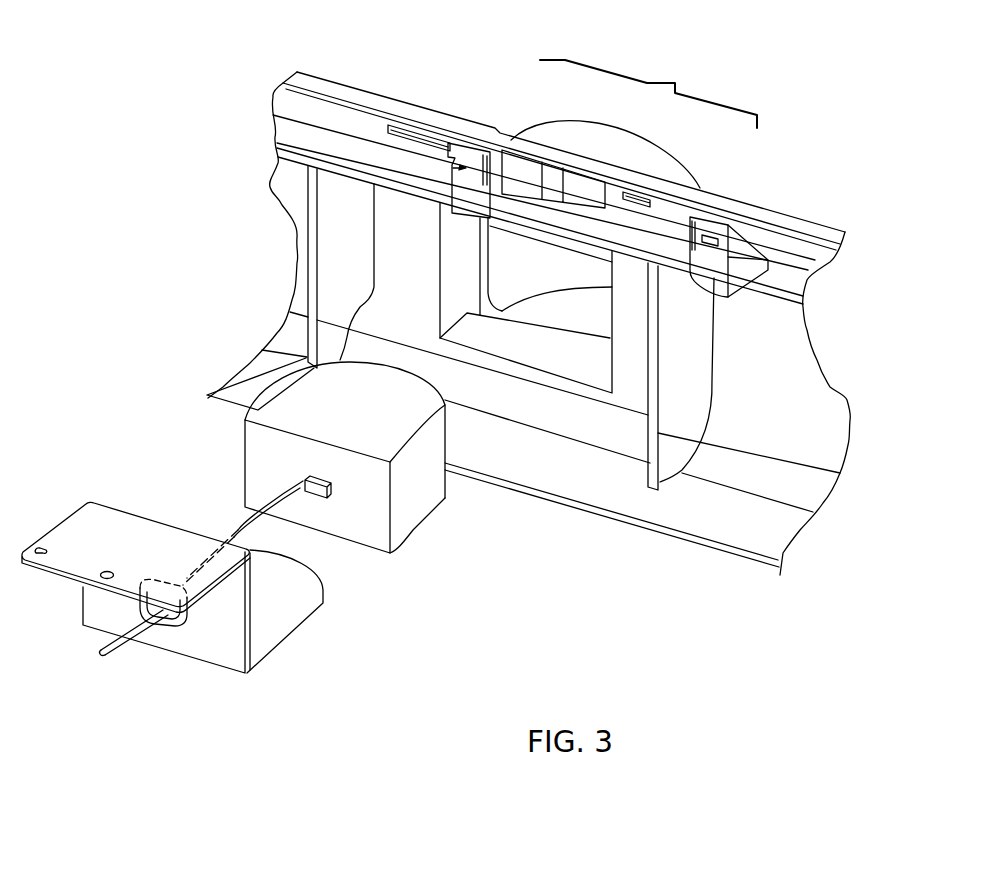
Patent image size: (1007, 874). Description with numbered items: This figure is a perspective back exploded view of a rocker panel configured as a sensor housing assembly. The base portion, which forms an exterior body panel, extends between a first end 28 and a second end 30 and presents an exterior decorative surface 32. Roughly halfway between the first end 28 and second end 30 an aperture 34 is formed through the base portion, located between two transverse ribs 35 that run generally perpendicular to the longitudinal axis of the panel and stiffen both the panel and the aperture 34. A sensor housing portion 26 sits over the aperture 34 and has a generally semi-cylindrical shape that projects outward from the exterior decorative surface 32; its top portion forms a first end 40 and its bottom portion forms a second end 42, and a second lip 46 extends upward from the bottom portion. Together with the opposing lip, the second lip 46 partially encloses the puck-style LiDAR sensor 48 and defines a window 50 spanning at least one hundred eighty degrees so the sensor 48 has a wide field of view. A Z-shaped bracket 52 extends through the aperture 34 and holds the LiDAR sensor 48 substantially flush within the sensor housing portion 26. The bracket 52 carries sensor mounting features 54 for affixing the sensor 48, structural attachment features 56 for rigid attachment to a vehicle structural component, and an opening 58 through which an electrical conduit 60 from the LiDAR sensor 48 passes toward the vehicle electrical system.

The sensor housing portion 26 is at (648, 94).
The first end 28 is at (836, 282).
The second end 30 is at (264, 105).
The exterior decorative surface 32 is at (361, 83).
The aperture 34 is at (573, 353).
The transverse ribs 35 is at (312, 187).
The first end 40 is at (640, 158).
The second end 42 is at (588, 315).
The second lip 46 is at (520, 270).
The LiDAR sensor 48 is at (367, 404).
The window 50 is at (496, 235).
The bracket 52 is at (211, 603).
The sensor mounting features 54 is at (300, 598).
The structural attachment features 56 is at (107, 571).
The opening 58 is at (164, 625).
The electrical conduit 60 is at (110, 657).